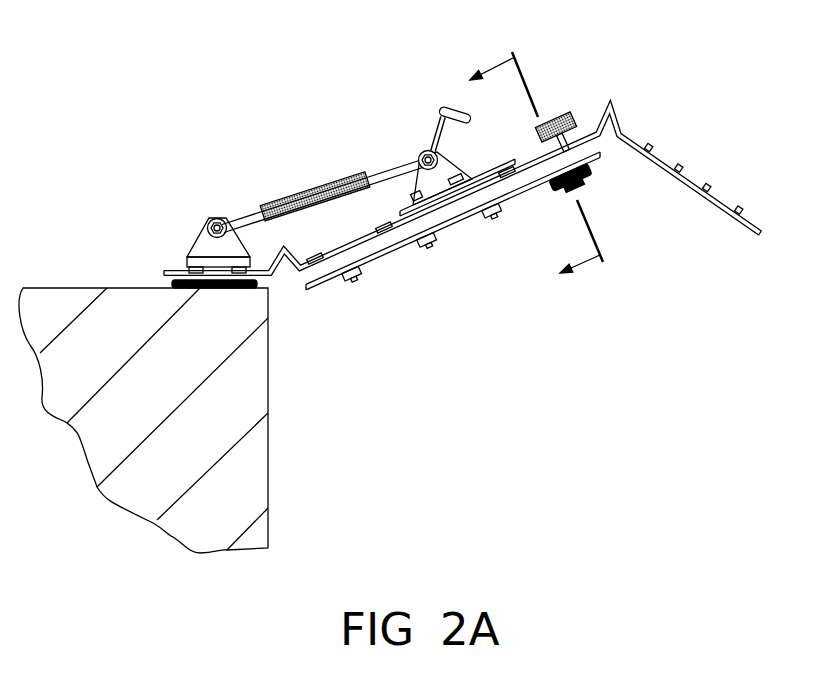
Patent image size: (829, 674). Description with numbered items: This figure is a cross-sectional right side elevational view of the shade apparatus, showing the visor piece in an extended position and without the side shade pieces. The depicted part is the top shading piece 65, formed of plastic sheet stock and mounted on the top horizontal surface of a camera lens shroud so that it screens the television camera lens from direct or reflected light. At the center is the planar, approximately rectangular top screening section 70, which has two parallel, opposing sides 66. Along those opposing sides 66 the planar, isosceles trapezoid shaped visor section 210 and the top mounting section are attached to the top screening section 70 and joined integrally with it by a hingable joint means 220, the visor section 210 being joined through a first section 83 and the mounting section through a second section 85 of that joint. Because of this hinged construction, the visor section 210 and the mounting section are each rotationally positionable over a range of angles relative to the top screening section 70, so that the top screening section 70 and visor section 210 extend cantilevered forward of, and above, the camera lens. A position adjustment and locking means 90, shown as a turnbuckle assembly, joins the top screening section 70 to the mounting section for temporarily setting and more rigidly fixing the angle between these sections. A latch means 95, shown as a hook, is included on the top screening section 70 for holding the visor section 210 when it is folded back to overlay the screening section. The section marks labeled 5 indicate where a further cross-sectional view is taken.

The hingable joint means 220 is at (302, 254).
The opposing sides 66 is at (299, 278).
The top shading piece 65 is at (605, 83).
The first section 83 is at (613, 106).
The visor section 210 is at (667, 162).
The second section 85 is at (285, 252).
The position adjustment and locking means 90 is at (293, 190).
The top screening section 70 is at (490, 177).
The latch means 95 is at (444, 105).
The section line 5- 5 is at (526, 173).